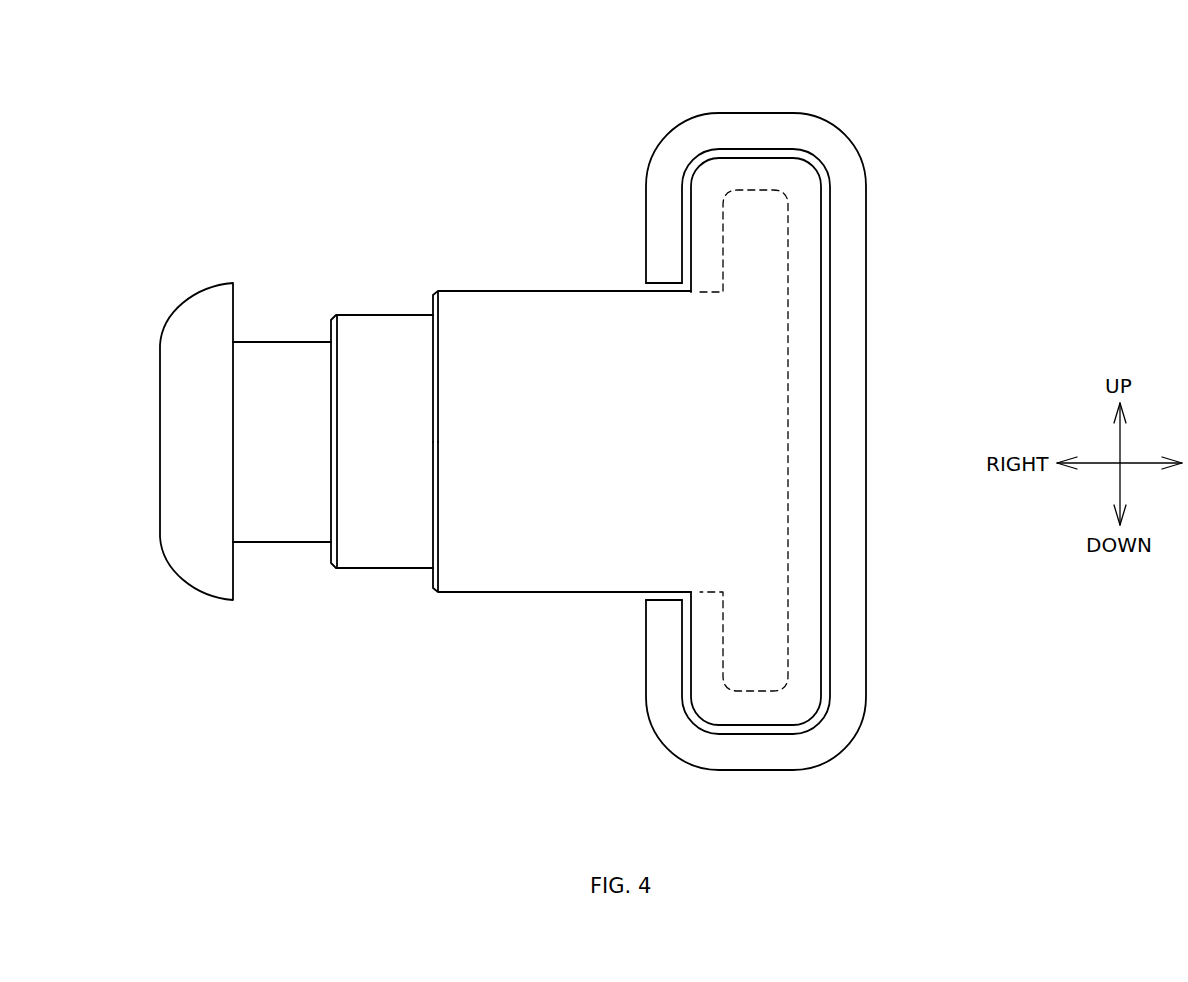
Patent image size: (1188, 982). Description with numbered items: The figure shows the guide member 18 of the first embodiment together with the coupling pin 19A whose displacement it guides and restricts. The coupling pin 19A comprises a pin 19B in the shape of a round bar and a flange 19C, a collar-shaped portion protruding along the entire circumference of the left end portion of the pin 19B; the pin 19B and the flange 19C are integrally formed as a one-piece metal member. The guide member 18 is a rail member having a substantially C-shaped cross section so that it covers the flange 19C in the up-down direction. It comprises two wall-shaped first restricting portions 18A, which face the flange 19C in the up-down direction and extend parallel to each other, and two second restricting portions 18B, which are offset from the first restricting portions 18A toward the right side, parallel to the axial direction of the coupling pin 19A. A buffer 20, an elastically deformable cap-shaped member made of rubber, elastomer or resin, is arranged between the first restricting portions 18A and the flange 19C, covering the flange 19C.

The guide member 18 is at (772, 114).
The first restricting portion 18A is at (738, 132).
The second restricting portion 18B is at (646, 250).
The coupling pin 19A is at (490, 291).
The pin 19B is at (497, 550).
The flange 19C is at (788, 627).
The buffer 20 is at (805, 314).